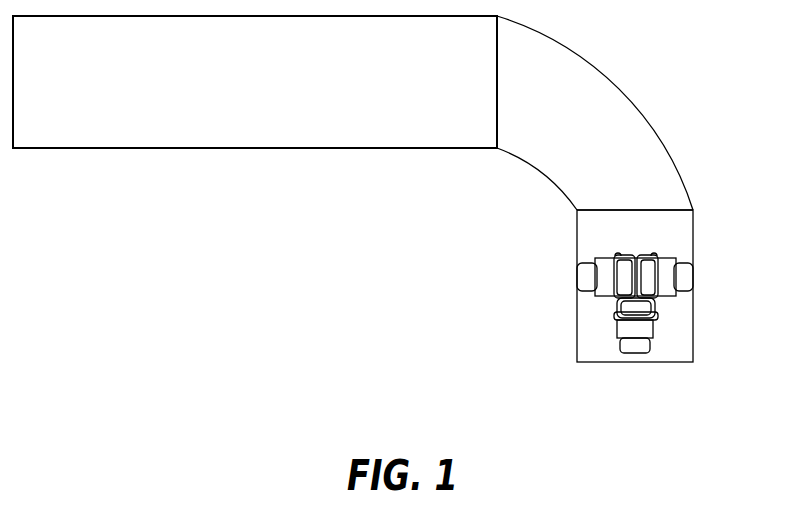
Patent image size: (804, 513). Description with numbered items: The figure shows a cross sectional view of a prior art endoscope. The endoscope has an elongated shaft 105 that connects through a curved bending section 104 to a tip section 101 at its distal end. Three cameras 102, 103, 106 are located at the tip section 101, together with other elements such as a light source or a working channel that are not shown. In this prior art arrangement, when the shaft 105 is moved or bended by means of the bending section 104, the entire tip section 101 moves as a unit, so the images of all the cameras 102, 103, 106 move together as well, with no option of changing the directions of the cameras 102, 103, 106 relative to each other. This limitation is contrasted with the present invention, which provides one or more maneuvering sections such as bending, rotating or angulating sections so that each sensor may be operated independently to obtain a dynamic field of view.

The tip section 101 is at (668, 362).
The camera 102 is at (623, 327).
The camera 103 is at (670, 275).
The bending section 104 is at (598, 137).
The shaft 105 is at (257, 96).
The camera 106 is at (605, 277).